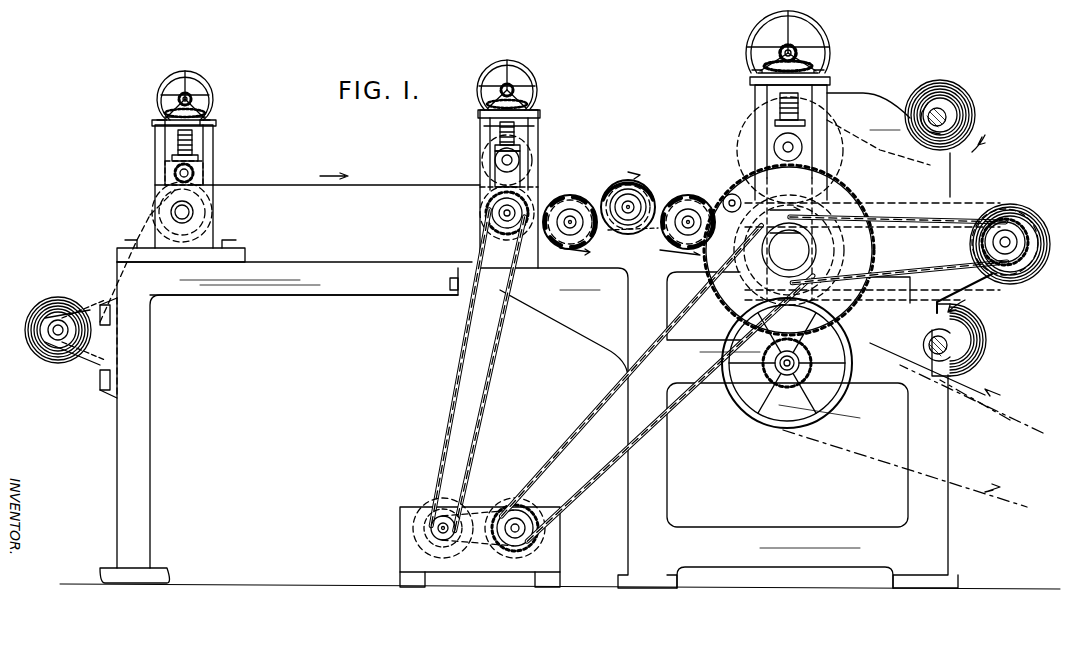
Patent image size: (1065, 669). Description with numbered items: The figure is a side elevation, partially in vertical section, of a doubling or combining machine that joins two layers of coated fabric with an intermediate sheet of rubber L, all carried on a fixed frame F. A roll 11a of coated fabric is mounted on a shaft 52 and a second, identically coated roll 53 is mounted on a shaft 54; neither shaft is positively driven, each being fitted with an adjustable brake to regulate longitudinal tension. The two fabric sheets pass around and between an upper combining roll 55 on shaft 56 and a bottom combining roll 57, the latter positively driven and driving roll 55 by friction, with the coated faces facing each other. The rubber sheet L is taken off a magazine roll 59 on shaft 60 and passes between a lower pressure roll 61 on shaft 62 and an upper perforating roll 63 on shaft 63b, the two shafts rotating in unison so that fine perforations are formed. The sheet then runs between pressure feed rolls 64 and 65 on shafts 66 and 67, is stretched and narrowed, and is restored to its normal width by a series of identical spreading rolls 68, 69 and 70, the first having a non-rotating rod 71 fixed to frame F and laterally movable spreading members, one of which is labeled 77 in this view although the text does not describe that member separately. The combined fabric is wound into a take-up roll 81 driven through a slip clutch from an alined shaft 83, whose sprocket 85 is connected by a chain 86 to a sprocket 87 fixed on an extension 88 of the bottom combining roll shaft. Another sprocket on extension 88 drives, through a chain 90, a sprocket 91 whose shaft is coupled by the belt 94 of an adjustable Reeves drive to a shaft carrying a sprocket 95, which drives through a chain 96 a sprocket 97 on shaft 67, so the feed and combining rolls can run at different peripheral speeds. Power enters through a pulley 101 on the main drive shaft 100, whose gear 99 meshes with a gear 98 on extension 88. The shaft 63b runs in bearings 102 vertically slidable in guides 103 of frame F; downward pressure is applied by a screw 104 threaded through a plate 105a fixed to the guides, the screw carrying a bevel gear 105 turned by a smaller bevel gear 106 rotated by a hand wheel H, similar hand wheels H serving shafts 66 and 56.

The roll of coated fabric 11a is at (960, 105).
The shaft 52 is at (930, 112).
The second roll of fabric 53 is at (970, 330).
The shaft 54 is at (948, 348).
The upper combining roll 55 is at (775, 143).
The shaft 56 is at (786, 147).
The bottom combining roll 57 is at (845, 250).
The magazine roll 59 is at (33, 317).
The shaft 60 is at (58, 340).
The lower pressure roll 61 is at (213, 195).
The shaft 62 is at (175, 212).
The perforating roll 63 is at (197, 168).
The shaft 63b is at (175, 176).
The pressure feed roll 64 is at (520, 142).
The pressure feed roll 65 is at (485, 208).
The shaft 66 is at (500, 160).
The shaft 67 is at (495, 214).
The spreading roll 68 is at (577, 189).
The spreading roll 69 is at (630, 172).
The spreading roll 70 is at (694, 186).
The rod or shaft 71 is at (625, 205).
The guide 77 is at (648, 197).
The take-up roll 81 is at (1012, 195).
The alined shaft 83 is at (1005, 240).
The sprocket 85 is at (985, 242).
The chain 86 is at (908, 213).
The sprocket 87 is at (758, 284).
The extension 88 is at (789, 250).
The chain 90 is at (625, 384).
The sprocket 91 is at (523, 514).
The belt 94 is at (488, 498).
The sprocket 95 is at (440, 518).
The chain 96 is at (462, 372).
The sprocket 97 is at (492, 230).
The gear 98 is at (845, 176).
The gear 99 is at (787, 376).
The main drive shaft 100 is at (762, 395).
The pulley 101 is at (830, 400).
The bearings 102 is at (198, 157).
The guides 103 is at (160, 143).
The screw 104 is at (192, 138).
The bevel gear 105 is at (205, 112).
The plate 105a is at (160, 126).
The bevel gear 106 is at (188, 95).
The hand wheel H is at (166, 80).
The rubber sheet L is at (140, 232).
The frame F is at (330, 300).